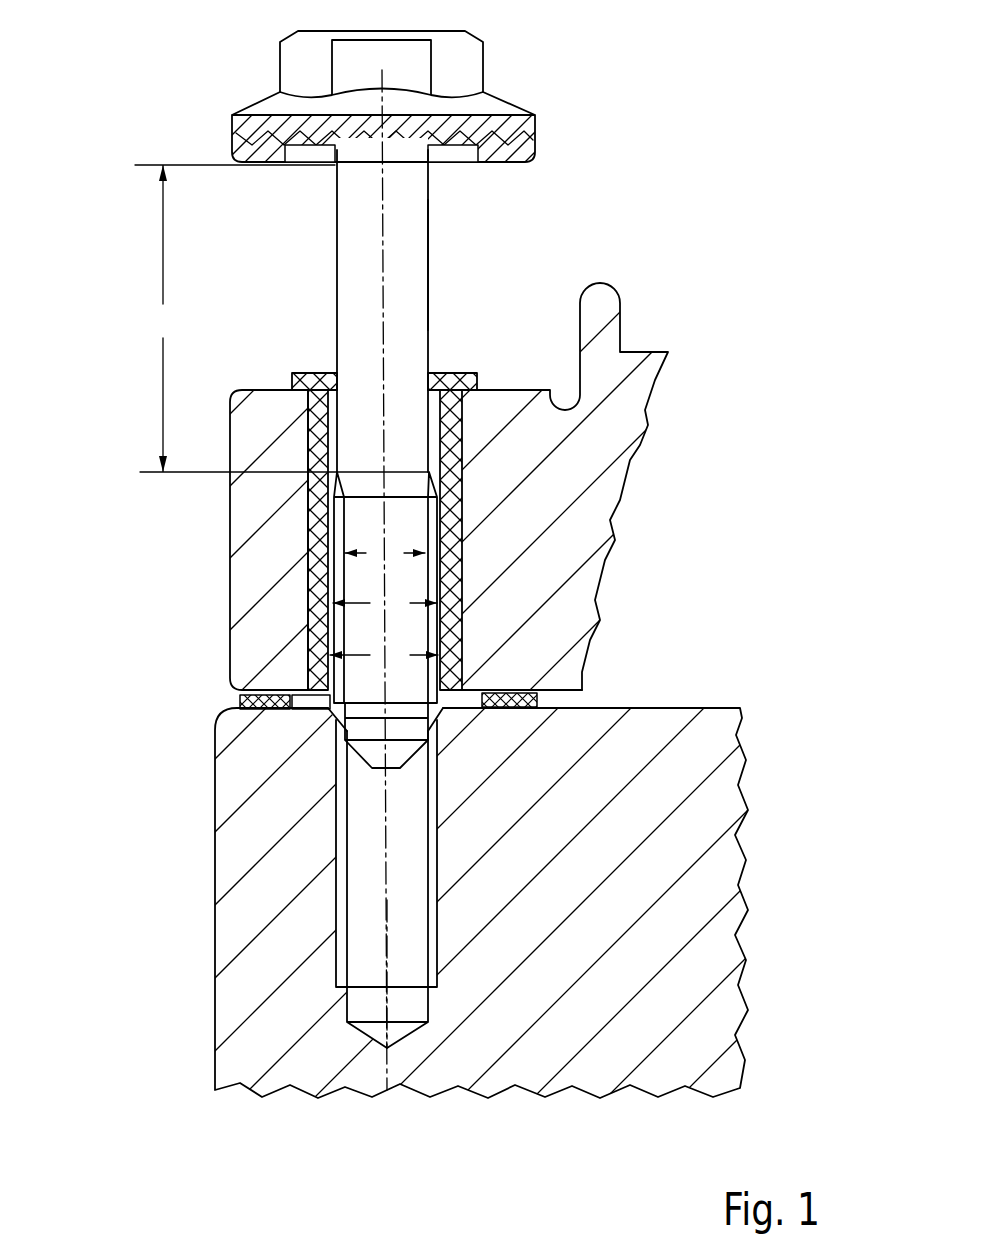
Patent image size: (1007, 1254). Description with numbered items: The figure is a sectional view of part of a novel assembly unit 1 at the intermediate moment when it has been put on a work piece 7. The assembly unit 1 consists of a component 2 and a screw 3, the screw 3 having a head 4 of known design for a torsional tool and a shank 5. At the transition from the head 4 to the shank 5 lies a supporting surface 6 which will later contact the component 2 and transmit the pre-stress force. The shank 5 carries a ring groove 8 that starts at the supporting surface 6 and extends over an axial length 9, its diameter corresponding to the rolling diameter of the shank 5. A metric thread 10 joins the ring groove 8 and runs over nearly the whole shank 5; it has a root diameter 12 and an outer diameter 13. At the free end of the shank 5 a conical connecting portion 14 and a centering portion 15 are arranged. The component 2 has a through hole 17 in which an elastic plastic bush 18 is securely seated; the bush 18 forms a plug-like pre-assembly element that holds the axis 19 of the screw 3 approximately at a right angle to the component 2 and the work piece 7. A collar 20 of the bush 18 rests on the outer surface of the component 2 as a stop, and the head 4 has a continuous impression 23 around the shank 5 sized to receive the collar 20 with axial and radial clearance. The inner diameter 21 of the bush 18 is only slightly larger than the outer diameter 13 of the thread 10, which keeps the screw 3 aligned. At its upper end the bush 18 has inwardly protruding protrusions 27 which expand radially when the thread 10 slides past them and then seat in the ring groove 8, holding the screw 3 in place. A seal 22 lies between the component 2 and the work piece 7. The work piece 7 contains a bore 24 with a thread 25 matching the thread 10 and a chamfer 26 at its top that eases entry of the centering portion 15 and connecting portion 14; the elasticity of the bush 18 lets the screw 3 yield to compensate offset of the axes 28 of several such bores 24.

The assembly unit 1 is at (690, 320).
The component 2 is at (563, 563).
The screw 3 is at (540, 140).
The head 4 is at (513, 87).
The shank 5 is at (402, 223).
The supporting surface 6 is at (262, 165).
The work piece 7 is at (667, 805).
The ring groove 8 is at (428, 263).
The axial length 9 is at (281, 318).
The thread 10 is at (428, 621).
The root diameter 12 is at (385, 553).
The outer diameter 13 is at (385, 603).
The connecting portion 14 is at (486, 690).
The centering portion 15 is at (400, 752).
The through hole 17 is at (453, 488).
The bush 18 is at (312, 360).
The axis 19 is at (382, 312).
The collar 20 is at (467, 380).
The inner diameter 21 is at (384, 655).
The seal 22 is at (238, 702).
The impression 23 is at (313, 155).
The bore 24 is at (437, 873).
The thread 25 is at (437, 892).
The chamfer 26 is at (328, 712).
The protrusions 27 is at (452, 412).
The axes 28 is at (384, 940).